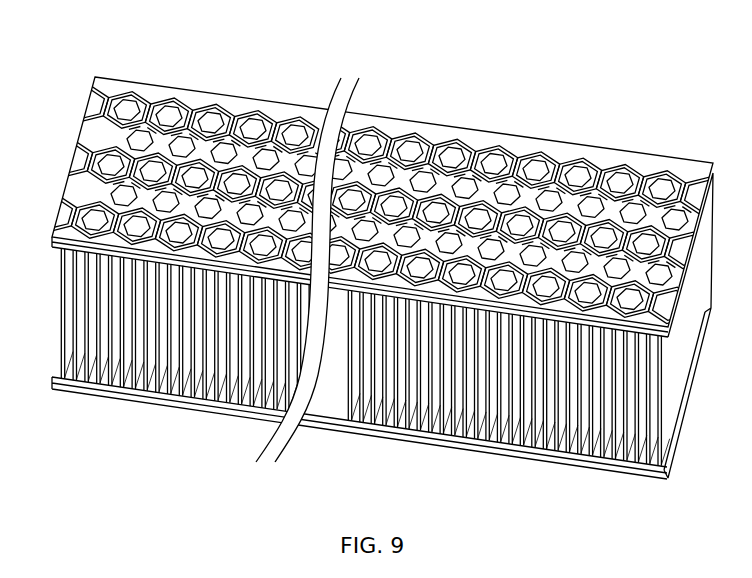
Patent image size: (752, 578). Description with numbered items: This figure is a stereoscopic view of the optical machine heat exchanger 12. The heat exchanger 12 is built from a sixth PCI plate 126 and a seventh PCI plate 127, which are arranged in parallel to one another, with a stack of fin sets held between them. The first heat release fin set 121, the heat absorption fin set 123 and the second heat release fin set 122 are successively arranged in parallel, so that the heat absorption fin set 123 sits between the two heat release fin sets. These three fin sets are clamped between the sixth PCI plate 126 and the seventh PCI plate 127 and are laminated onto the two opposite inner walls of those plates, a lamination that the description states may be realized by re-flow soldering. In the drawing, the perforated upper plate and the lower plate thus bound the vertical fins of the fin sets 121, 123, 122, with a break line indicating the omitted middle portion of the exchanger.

The optical machine heat exchanger 12 is at (290, 56).
The sixth PCI plate 126 is at (651, 160).
The second heat release fin set 122 is at (66, 303).
The heat absorption fin set 123 is at (243, 341).
The first heat release fin set 121 is at (459, 367).
The seventh PCI plate 127 is at (137, 400).